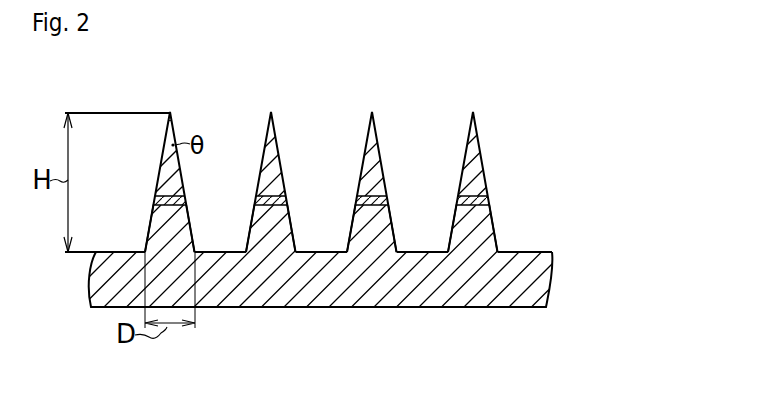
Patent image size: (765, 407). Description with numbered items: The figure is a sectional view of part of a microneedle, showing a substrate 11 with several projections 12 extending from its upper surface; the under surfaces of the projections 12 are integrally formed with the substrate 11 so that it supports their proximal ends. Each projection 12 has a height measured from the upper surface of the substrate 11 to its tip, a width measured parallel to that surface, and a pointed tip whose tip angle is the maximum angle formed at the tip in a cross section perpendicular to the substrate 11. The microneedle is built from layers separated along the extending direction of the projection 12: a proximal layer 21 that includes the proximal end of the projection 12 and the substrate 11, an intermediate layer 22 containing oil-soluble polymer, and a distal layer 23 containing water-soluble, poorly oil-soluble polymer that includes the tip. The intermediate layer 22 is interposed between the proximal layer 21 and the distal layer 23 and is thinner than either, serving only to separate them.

The substrate 11 is at (390, 319).
The projection 12 is at (248, 139).
The proximal layer 21 is at (290, 222).
The intermediate layer 22 is at (286, 198).
The distal layer 23 is at (280, 158).